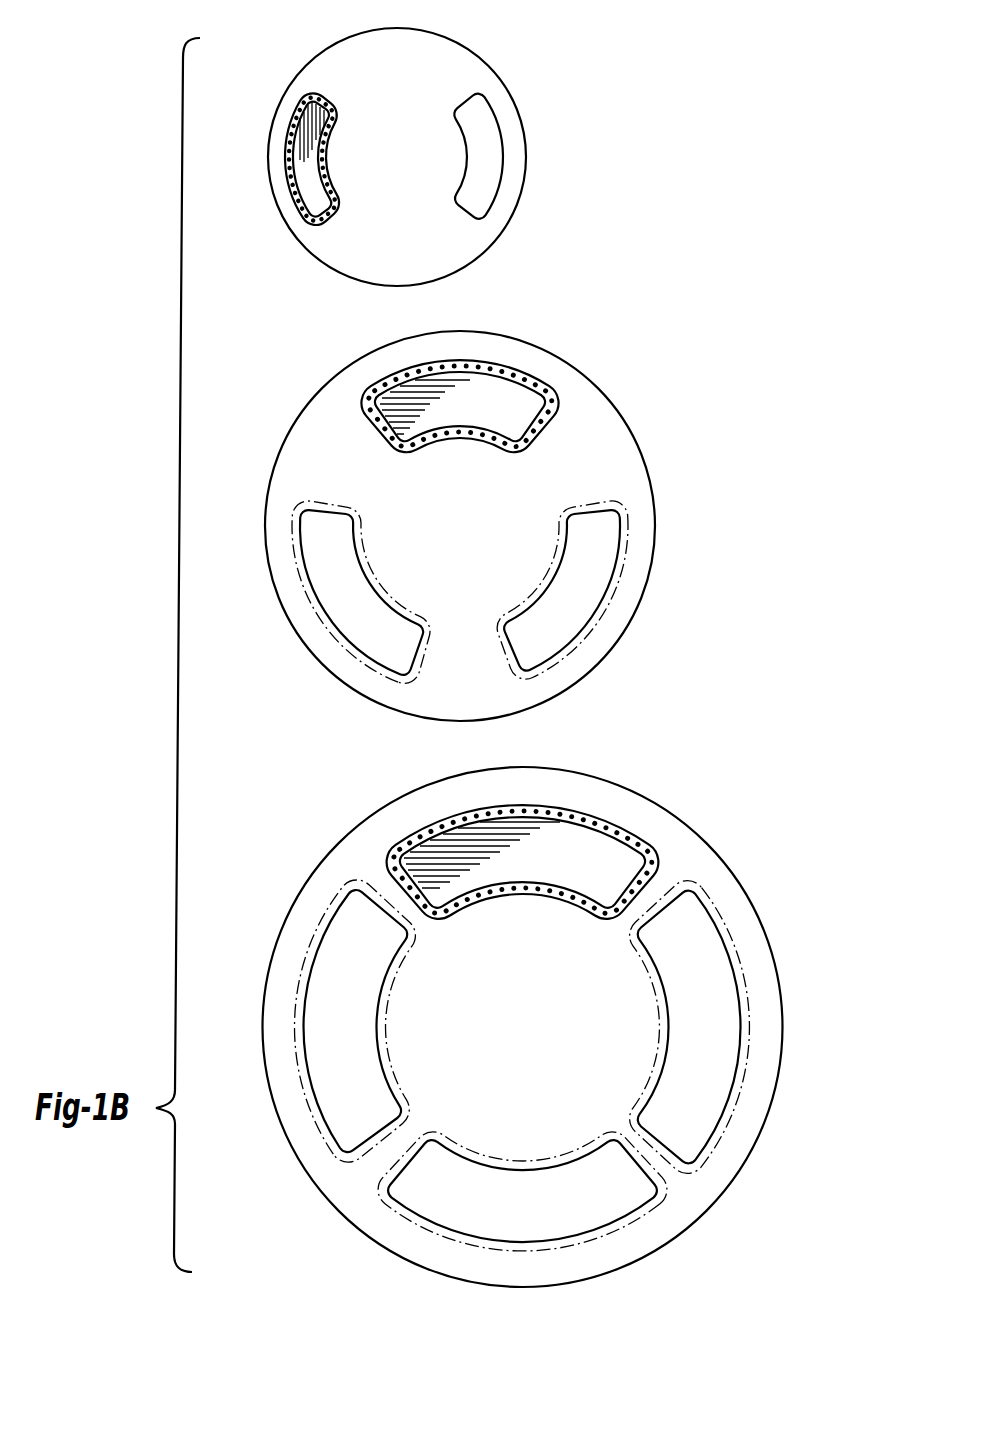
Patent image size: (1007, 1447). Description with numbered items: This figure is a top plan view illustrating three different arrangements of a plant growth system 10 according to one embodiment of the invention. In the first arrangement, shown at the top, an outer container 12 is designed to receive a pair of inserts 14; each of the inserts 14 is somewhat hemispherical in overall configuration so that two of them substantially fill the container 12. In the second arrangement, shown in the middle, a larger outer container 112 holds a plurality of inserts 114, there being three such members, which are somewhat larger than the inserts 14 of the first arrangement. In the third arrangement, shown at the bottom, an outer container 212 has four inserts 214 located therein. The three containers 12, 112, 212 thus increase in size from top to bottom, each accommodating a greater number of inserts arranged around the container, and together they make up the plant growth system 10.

The plant growth system 10 is at (585, 77).
The outer container 12 is at (486, 61).
The inserts 14 is at (504, 168).
The larger outer container 112 is at (640, 450).
The inserts 114 is at (528, 374).
The outer container 212 is at (725, 864).
The inserts 214 is at (591, 815).